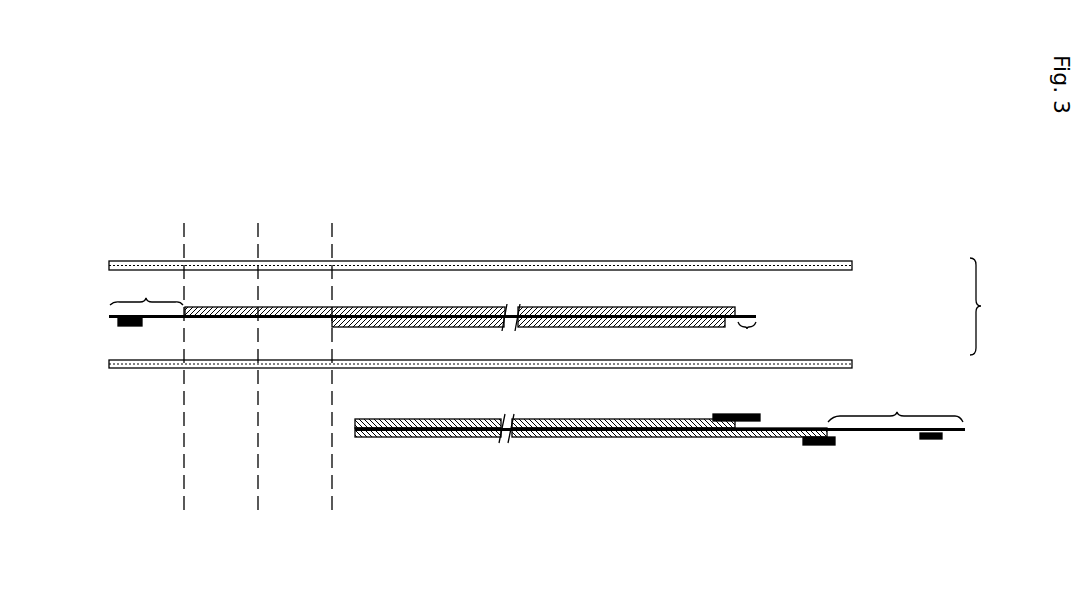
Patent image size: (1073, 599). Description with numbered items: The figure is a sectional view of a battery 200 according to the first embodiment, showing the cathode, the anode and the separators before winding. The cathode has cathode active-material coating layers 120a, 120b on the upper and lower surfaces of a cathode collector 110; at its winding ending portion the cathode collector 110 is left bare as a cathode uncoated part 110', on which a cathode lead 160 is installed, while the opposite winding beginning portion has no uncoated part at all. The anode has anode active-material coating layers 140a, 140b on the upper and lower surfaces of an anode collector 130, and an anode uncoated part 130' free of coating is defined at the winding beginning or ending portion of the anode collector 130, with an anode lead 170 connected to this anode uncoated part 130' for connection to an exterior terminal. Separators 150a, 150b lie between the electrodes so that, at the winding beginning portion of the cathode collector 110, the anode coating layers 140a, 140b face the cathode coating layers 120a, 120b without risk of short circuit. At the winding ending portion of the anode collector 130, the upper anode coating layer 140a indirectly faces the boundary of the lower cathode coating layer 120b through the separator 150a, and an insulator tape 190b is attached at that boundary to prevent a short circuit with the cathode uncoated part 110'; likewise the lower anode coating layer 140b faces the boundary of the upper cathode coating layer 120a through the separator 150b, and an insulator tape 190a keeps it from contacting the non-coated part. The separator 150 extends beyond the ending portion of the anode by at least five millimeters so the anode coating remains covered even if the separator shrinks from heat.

The display device 200 is at (737, 156).
The separator 150 is at (995, 306).
The separator 150a is at (857, 269).
The separator 150b is at (857, 364).
The anode collector 130 is at (432, 268).
The anode uncoated part 130' is at (435, 316).
The anode active-material coating layer 140a is at (605, 308).
The anode active-material coating layer 140b is at (457, 308).
The anode lead 170 is at (118, 325).
The cathode collector 110 is at (660, 479).
The cathode uncoated part 110' is at (895, 404).
The cathode active-material coating layer 120a is at (453, 438).
The cathode active-material coating layer 120b is at (603, 438).
The insulator tape 190a is at (747, 438).
The insulator tape 190b is at (808, 446).
The cathode lead 160 is at (928, 440).